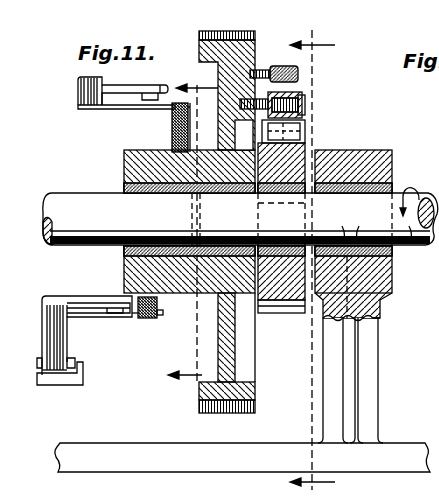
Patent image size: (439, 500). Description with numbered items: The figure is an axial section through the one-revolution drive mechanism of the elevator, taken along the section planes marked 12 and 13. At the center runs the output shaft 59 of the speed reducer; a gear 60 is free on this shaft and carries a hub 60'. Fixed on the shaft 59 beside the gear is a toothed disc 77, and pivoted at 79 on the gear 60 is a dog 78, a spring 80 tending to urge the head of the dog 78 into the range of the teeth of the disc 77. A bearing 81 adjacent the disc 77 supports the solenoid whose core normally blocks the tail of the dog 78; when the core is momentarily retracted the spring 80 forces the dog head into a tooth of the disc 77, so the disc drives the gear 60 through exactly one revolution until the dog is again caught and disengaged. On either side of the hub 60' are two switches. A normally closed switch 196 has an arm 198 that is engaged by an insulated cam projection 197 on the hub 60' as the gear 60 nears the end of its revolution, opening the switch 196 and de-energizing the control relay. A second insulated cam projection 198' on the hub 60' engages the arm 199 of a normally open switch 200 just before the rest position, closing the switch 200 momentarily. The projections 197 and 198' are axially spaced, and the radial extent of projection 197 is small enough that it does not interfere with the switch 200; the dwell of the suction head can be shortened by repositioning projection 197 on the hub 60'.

The section line 12 is at (312, 253).
The section line 13 is at (193, 233).
The output shaft 59 is at (405, 240).
The gear 60 is at (252, 234).
The hub 60' is at (164, 221).
The toothed disc 77 is at (272, 313).
The dog 78 is at (300, 126).
The pivot 79 is at (302, 104).
The spring 80 is at (290, 82).
The bearing 81 is at (352, 128).
The normally closed switch 196 is at (106, 306).
The insulated cam projection 197 is at (150, 318).
The arm 198 is at (133, 328).
The second insulated cam projection 198' is at (157, 127).
The arm 199 is at (123, 110).
The normally open switch 200 is at (159, 90).